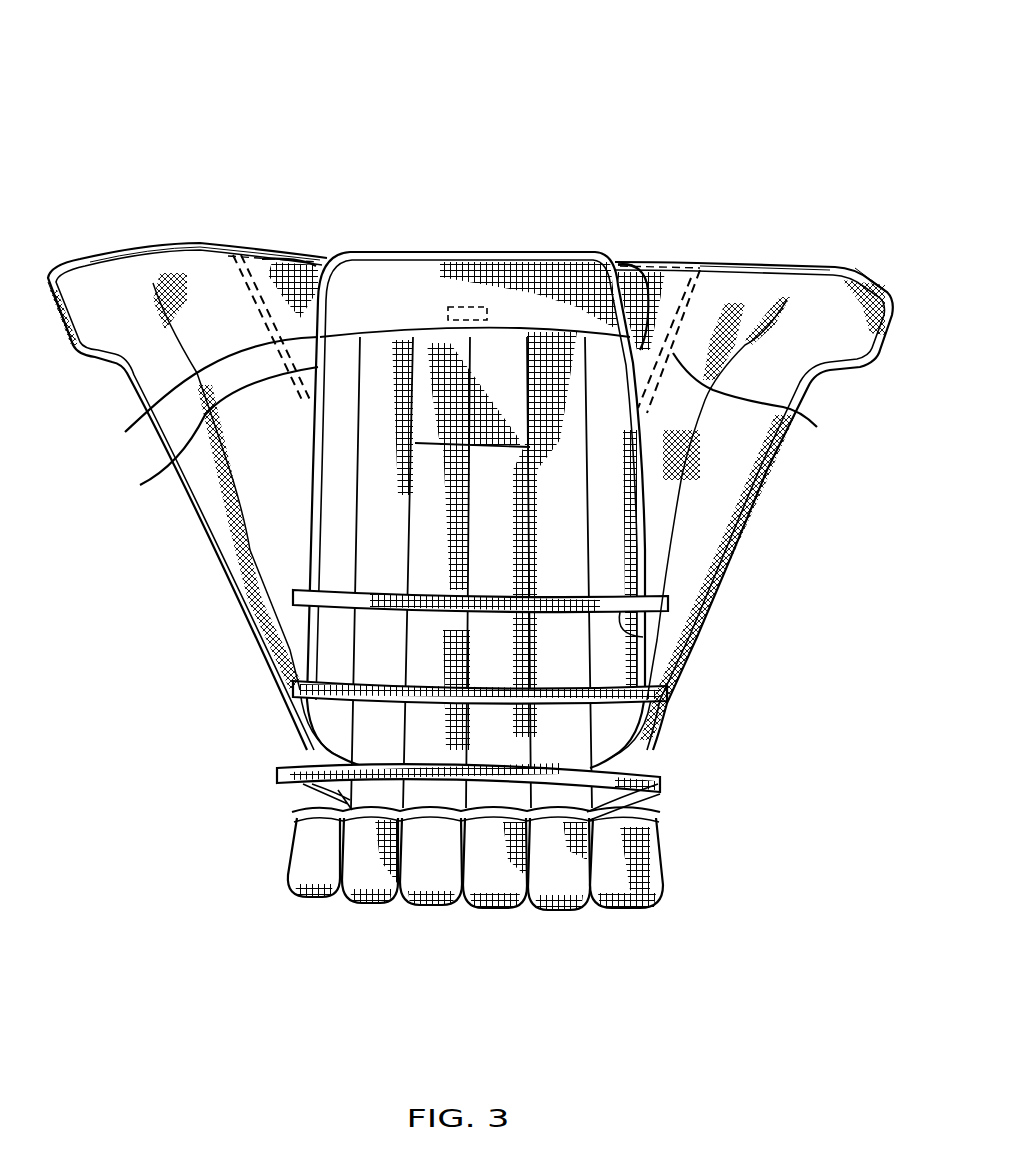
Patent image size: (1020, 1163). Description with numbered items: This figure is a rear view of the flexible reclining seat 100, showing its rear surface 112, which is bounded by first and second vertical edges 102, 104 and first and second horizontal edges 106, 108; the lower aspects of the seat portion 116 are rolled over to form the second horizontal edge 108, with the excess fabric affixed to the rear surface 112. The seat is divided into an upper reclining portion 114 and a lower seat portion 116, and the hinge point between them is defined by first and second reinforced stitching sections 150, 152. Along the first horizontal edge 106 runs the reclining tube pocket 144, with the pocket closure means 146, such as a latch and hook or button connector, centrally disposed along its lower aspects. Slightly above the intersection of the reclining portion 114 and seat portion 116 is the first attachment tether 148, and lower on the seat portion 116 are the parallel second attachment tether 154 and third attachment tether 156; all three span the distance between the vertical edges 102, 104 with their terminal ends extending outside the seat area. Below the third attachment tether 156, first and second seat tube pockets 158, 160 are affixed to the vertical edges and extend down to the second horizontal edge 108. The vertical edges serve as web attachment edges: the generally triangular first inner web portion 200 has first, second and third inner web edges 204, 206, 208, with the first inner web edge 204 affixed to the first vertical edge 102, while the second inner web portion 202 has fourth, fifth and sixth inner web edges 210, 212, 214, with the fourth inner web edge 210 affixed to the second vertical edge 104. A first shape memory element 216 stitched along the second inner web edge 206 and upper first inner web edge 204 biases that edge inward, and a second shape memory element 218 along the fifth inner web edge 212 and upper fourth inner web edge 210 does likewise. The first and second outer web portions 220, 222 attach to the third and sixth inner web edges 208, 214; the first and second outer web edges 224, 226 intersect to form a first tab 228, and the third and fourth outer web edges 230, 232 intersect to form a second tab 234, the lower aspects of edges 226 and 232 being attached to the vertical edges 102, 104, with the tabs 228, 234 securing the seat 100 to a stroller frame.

The flexible reclining seat 100 is at (387, 143).
The rear surface 112 is at (474, 542).
The first vertical edge 102 is at (647, 477).
The second vertical edge 104 is at (318, 490).
The first horizontal edge 106 is at (470, 240).
The second horizontal edge 108 is at (500, 907).
The reclining portion 114 is at (480, 502).
The seat portion 116 is at (493, 847).
The reclining tube pocket 144 is at (547, 240).
The pocket closure means 146 is at (447, 303).
The first attachment tether 148 is at (643, 637).
The first reinforced stitching section 150 is at (657, 743).
The second reinforced stitching section 152 is at (307, 733).
The second attachment tether 154 is at (670, 707).
The third attachment tether 156 is at (660, 790).
The first seat tube pocket 158 is at (633, 812).
The second seat tube pocket 160 is at (303, 797).
The first inner web portion 200 is at (667, 267).
The second inner web portion 202 is at (267, 250).
The first inner web edge 204 is at (623, 267).
The second inner web edge 206 is at (647, 263).
The third inner web edge 208 is at (767, 398).
The fourth inner web edge 210 is at (201, 435).
The fifth inner web edge 212 is at (297, 240).
The sixth inner web edge 214 is at (195, 396).
The first shape memory element 216 is at (700, 262).
The second shape memory element 218 is at (322, 240).
The first outer web portion 220 is at (761, 290).
The second outer web portion 222 is at (153, 283).
The first outer web edge 224 is at (822, 263).
The second outer web edge 226 is at (733, 553).
The first tab 228 is at (850, 320).
The third outer web edge 230 is at (200, 245).
The fourth outer web edge 232 is at (230, 583).
The second tab 234 is at (123, 293).